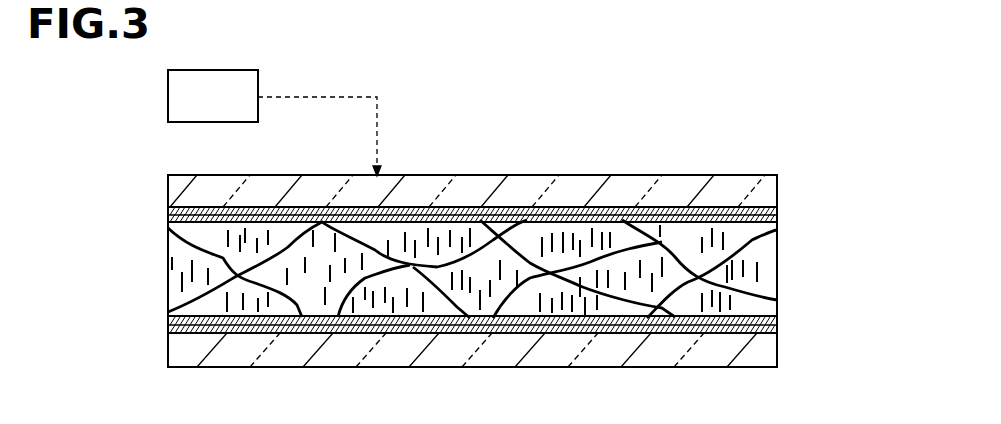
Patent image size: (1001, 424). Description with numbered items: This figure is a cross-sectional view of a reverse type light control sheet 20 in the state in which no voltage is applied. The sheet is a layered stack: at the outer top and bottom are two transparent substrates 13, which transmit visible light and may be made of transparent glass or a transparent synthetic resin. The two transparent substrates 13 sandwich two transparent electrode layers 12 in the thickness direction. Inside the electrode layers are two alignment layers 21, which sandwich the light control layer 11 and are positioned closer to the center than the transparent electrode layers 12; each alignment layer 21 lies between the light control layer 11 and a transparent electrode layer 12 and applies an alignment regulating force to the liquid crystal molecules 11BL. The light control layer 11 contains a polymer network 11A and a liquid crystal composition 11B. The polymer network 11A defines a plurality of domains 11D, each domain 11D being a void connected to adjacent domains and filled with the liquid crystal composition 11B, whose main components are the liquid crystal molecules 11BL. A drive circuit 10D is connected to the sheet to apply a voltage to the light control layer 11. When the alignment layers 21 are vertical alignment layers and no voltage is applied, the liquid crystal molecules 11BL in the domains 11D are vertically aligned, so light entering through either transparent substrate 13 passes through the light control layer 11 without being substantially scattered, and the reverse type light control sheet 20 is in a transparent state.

The drive circuit 10D is at (168, 97).
The light control layer 11 is at (168, 277).
The polymer network 11A is at (291, 238).
The liquid crystal composition 11B is at (522, 308).
The liquid crystal molecules 11BL is at (634, 239).
The domain 11D is at (288, 299).
The transparent electrode layer 12 is at (168, 211).
The transparent substrate 13 is at (777, 189).
The reverse type light control sheet 20 is at (866, 173).
The alignment layer 21 is at (777, 218).